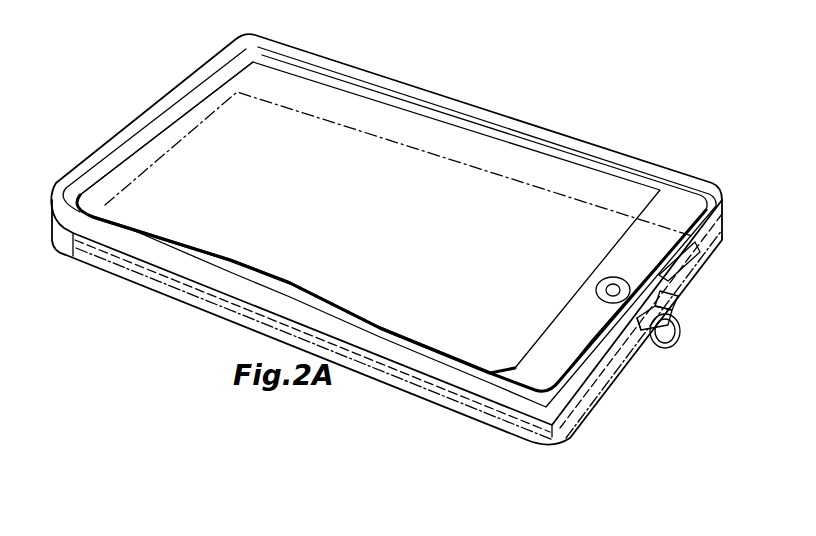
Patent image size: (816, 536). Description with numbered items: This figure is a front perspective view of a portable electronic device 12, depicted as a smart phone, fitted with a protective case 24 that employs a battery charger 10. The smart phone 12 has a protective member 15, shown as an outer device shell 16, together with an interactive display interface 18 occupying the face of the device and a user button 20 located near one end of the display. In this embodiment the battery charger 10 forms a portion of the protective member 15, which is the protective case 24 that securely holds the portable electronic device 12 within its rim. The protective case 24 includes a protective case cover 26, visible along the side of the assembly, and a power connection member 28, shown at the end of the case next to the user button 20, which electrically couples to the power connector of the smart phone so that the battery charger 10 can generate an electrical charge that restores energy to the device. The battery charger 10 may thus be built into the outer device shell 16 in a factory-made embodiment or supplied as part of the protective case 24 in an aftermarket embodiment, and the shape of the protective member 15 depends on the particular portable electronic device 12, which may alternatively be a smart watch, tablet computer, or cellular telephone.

The battery charger 10 is at (146, 263).
The portable electronic device 12 is at (680, 207).
The protective member 15 is at (70, 252).
The outer device shell 16 is at (213, 302).
The interactive display interface 18 is at (548, 150).
The user button 20 is at (630, 280).
The protective case 24 is at (130, 127).
The protective case cover 26 is at (398, 378).
The power connection member 28 is at (668, 318).